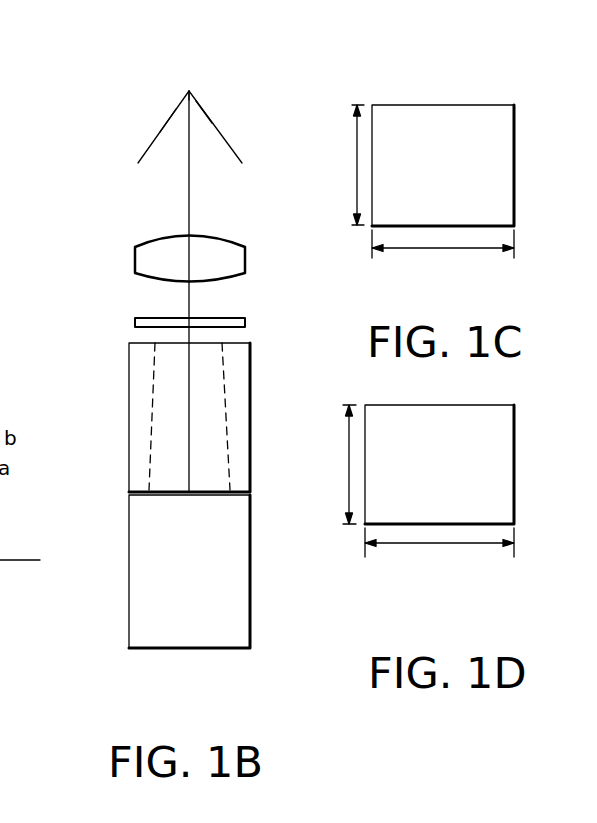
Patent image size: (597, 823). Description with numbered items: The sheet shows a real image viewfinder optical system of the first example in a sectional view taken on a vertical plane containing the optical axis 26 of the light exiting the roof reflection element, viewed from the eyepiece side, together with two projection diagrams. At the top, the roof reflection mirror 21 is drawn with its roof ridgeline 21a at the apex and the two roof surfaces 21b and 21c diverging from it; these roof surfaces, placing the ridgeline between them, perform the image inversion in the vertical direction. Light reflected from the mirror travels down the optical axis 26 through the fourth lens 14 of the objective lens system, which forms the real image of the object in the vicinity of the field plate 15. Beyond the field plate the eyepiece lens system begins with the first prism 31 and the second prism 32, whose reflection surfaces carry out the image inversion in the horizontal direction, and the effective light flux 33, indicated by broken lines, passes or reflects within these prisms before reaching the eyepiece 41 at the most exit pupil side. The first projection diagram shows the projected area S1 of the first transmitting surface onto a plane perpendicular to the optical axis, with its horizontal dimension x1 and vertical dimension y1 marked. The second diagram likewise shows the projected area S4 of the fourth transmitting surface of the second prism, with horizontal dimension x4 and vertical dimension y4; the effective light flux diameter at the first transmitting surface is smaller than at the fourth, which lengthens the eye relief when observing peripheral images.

In FIG. 1B, the fourth lens 14 is at (135, 258).
In FIG. 1B, the field plate 15 is at (135, 320).
In FIG. 1B, the roof reflection mirror 21 is at (156, 136).
In FIG. 1B, the roof ridgeline 21a is at (187, 91).
In FIG. 1B, the roof surface 21b is at (168, 117).
In FIG. 1B, the roof surface 21c is at (205, 112).
In FIG. 1B, the optical axis of the exit light 26 is at (189, 201).
In FIG. 1B, the first prism 31 is at (143, 405).
In FIG. 1B, the second prism 32 is at (143, 593).
In FIG. 1B, the effective light flux 33 is at (223, 392).
In FIG. 1B, the eyepiece 41 is at (20, 600).
In FIG. 1C, the projected area of the first transmitting surface S1 is at (492, 178).
In FIG. 1D, the projected area of the fourth transmitting surface S4 is at (490, 469).
In FIG. 1C, the horizontal dimension of the first transmitting surface projection x1 is at (443, 255).
In FIG. 1C, the vertical dimension of the first transmitting surface projection y1 is at (340, 165).
In FIG. 1D, the horizontal dimension of the fourth transmitting surface projection x4 is at (439, 550).
In FIG. 1D, the vertical dimension of the fourth transmitting surface projection y4 is at (336, 464).